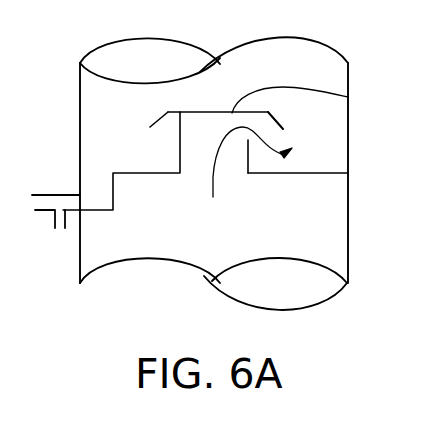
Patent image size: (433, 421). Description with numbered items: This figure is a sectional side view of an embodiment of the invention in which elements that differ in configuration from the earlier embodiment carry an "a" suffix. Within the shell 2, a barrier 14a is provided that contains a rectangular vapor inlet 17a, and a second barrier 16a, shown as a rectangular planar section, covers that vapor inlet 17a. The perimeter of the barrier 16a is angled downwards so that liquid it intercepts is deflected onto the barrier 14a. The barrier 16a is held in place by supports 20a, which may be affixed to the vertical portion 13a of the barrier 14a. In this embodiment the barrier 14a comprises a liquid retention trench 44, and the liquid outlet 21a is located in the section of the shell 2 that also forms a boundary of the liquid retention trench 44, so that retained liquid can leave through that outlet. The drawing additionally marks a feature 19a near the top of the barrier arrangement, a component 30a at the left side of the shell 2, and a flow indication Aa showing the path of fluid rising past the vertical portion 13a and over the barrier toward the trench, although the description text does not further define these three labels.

The shell 2 is at (347, 250).
The vertical portion 13a is at (250, 157).
The barrier 14a is at (310, 173).
The barrier 16a is at (348, 97).
The vapor inlet 17a is at (235, 175).
The edge 19a is at (270, 112).
The supports 20a is at (178, 132).
The liquid outlet 21a is at (82, 200).
The insert member 30a is at (68, 203).
The liquid retention trench 44 is at (107, 188).
The flow direction Aa is at (246, 175).